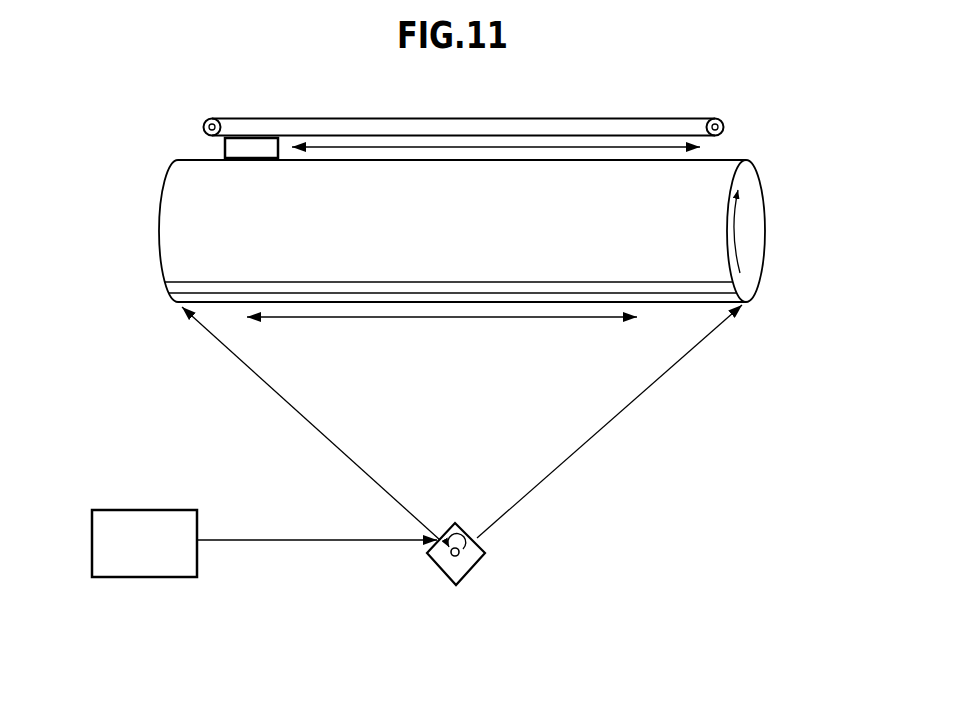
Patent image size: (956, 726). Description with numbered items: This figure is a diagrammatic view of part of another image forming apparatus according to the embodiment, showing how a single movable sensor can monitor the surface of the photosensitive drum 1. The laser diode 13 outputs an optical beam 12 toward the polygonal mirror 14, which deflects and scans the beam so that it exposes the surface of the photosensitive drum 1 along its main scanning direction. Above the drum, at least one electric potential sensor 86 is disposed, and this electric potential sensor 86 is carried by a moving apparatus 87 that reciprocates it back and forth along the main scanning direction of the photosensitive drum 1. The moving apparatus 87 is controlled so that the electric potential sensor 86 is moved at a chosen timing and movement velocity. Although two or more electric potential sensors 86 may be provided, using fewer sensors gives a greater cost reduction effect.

The photosensitive drum 1 is at (764, 177).
The optical beam 12 is at (268, 540).
The laser diode 13 is at (140, 510).
The polygonal mirror 14 is at (487, 553).
The electric potential sensor 86 is at (203, 128).
The moving apparatus 87 is at (214, 115).